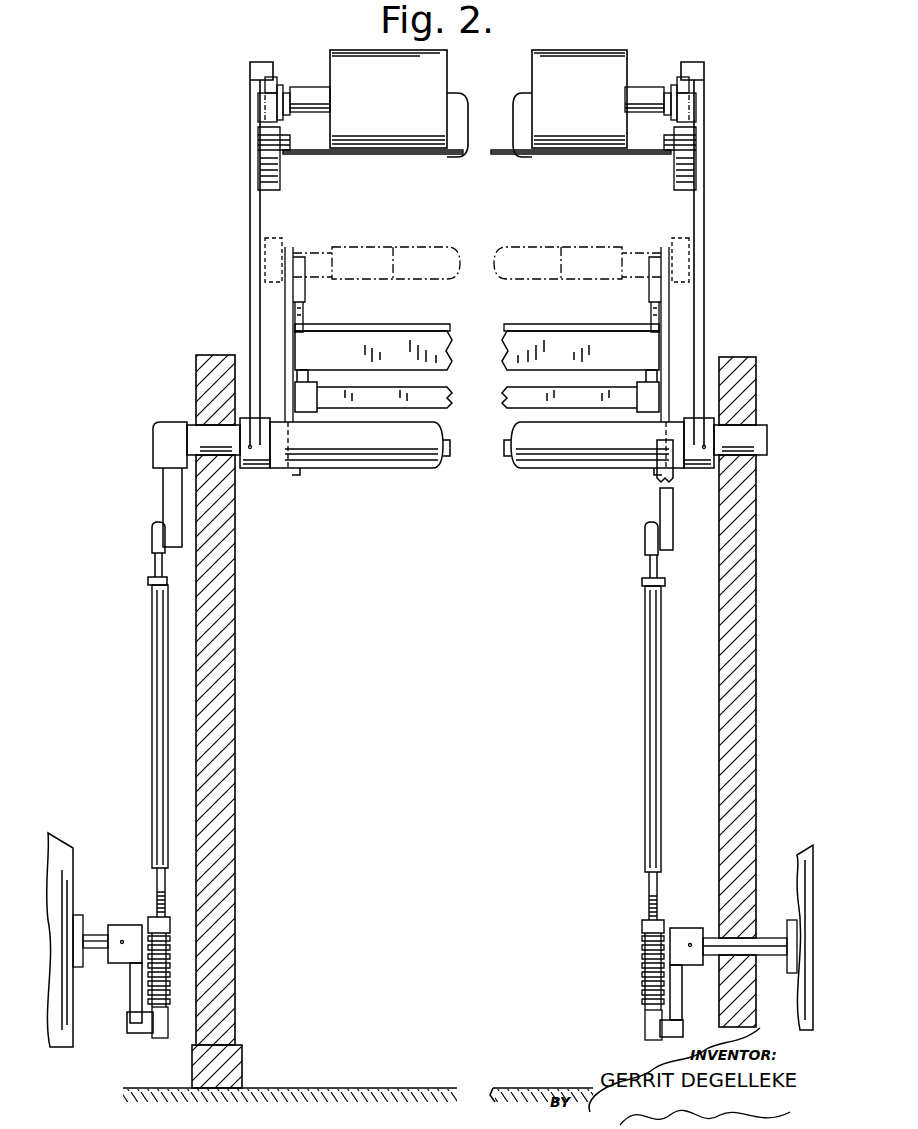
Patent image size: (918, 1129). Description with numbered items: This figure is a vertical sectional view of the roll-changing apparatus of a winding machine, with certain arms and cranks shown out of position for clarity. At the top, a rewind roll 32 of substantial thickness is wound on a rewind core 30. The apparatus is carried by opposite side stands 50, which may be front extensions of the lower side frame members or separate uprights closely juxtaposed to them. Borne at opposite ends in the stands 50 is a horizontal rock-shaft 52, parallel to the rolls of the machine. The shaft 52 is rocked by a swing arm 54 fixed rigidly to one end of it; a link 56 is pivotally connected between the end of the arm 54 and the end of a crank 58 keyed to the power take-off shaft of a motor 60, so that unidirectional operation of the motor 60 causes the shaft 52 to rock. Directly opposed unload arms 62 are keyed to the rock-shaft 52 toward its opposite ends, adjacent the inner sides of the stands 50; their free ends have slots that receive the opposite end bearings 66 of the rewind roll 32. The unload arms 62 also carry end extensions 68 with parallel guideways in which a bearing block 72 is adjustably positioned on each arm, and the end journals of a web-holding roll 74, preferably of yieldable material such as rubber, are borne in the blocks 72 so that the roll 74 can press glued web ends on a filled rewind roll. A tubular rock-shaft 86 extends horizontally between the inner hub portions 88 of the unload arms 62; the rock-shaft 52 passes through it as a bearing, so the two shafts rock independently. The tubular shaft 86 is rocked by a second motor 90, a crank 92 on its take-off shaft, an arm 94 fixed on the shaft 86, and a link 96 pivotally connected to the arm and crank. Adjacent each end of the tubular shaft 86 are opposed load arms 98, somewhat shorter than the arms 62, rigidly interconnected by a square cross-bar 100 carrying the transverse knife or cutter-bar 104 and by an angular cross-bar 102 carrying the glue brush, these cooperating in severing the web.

The rewind core 30 is at (363, 247).
The rewind roll 32 is at (540, 68).
The side stands 50 is at (225, 667).
The rock-shaft 52 is at (210, 455).
The swing arm 54 is at (168, 488).
The link 56 is at (155, 726).
The crank 58 is at (131, 991).
The motor 60 is at (62, 845).
The unload arms 62 is at (250, 207).
The end bearings 66 is at (272, 90).
The end extensions 68 is at (272, 178).
The bearing block 72 is at (290, 152).
The web-holding roll 74 is at (512, 152).
The tubular rock-shaft 86 is at (525, 462).
The hub portions 88 is at (257, 469).
The motor 90 is at (806, 855).
The crank 92 is at (676, 989).
The arm 94 is at (660, 503).
The link 96 is at (648, 722).
The load arms 98 is at (290, 303).
The cross-bar 100 is at (522, 352).
The cross-bar 102 is at (520, 395).
The knife or cutter-bar 104 is at (515, 325).